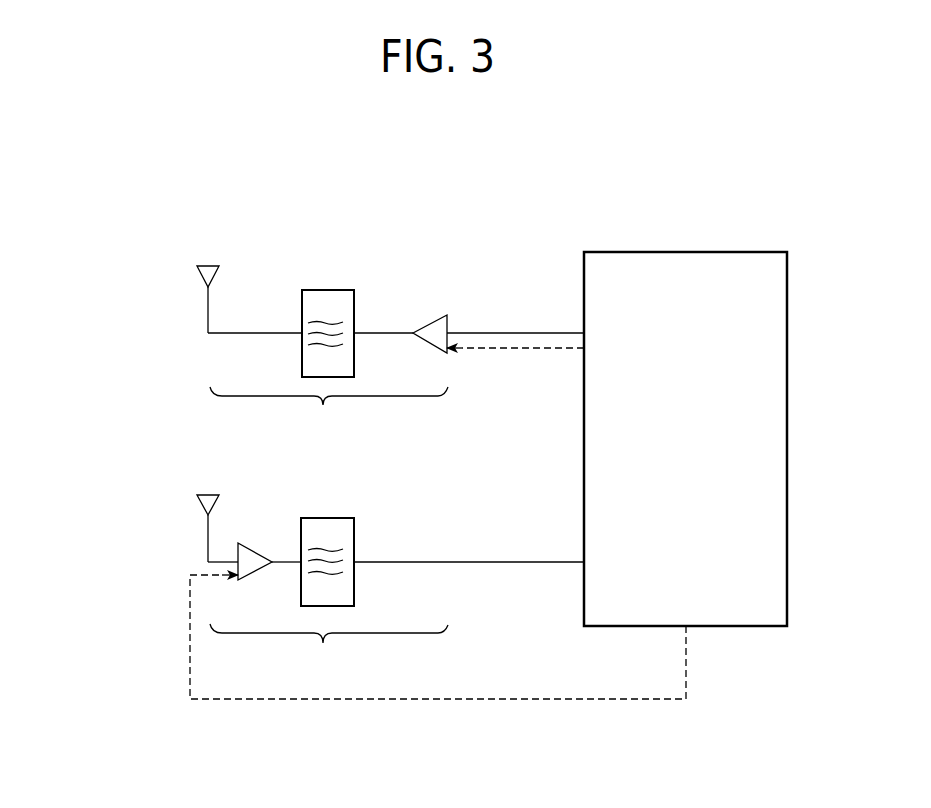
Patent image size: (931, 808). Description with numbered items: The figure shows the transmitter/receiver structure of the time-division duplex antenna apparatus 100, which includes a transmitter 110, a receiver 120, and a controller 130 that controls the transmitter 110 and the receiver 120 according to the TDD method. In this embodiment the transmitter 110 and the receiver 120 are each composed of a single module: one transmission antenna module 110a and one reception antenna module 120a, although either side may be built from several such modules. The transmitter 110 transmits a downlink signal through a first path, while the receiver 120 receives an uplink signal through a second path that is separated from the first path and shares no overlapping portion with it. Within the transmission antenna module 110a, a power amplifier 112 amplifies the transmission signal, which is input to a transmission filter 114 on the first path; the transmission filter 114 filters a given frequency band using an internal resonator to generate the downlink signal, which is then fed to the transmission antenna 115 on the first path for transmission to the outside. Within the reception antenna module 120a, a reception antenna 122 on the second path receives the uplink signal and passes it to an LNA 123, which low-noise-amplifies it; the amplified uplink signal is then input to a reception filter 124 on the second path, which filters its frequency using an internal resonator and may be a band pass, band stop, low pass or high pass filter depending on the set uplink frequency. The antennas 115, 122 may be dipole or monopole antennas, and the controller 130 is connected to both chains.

The TDD antenna apparatus 100 is at (485, 163).
The transmitter 110 is at (168, 363).
The transmission antenna module 110a is at (270, 262).
The power amplifier 112 is at (447, 323).
The transmission filter 114 is at (354, 312).
The transmission antenna 115 is at (202, 277).
The receiver 120 is at (160, 587).
The reception antenna module 120a is at (460, 507).
The reception antenna 122 is at (202, 505).
The LNA 123 is at (255, 550).
The reception filter 124 is at (354, 539).
The controller 130 is at (687, 252).